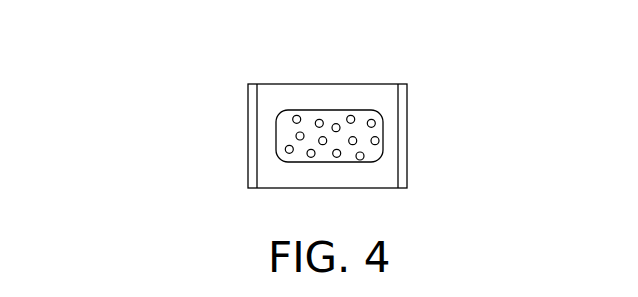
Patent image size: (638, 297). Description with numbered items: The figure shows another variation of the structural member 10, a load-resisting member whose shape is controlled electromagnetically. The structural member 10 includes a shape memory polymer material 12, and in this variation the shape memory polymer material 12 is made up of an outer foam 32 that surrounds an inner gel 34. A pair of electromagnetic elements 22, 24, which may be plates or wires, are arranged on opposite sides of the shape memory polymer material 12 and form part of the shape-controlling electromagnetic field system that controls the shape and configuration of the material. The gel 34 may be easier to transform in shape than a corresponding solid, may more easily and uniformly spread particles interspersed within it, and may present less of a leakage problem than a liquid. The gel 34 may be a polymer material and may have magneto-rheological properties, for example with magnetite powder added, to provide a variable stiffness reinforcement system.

The structural member 10 is at (206, 73).
The shape memory polymer material 12 is at (282, 74).
The electromagnetic element 22 is at (407, 132).
The electromagnetic element 24 is at (248, 153).
The outer foam 32 is at (373, 93).
The inner gel 34 is at (347, 155).